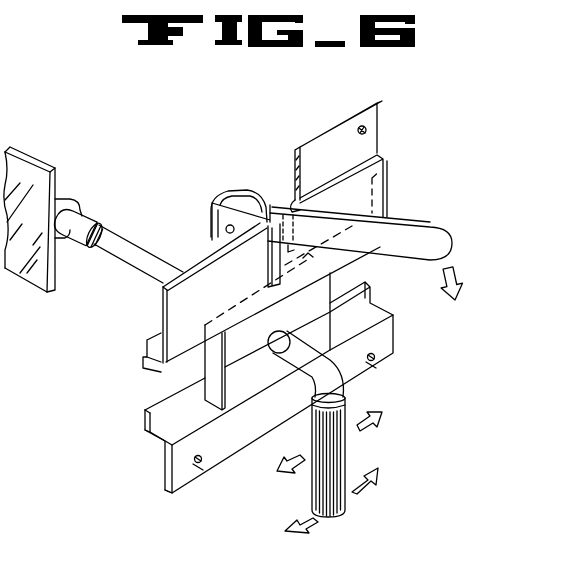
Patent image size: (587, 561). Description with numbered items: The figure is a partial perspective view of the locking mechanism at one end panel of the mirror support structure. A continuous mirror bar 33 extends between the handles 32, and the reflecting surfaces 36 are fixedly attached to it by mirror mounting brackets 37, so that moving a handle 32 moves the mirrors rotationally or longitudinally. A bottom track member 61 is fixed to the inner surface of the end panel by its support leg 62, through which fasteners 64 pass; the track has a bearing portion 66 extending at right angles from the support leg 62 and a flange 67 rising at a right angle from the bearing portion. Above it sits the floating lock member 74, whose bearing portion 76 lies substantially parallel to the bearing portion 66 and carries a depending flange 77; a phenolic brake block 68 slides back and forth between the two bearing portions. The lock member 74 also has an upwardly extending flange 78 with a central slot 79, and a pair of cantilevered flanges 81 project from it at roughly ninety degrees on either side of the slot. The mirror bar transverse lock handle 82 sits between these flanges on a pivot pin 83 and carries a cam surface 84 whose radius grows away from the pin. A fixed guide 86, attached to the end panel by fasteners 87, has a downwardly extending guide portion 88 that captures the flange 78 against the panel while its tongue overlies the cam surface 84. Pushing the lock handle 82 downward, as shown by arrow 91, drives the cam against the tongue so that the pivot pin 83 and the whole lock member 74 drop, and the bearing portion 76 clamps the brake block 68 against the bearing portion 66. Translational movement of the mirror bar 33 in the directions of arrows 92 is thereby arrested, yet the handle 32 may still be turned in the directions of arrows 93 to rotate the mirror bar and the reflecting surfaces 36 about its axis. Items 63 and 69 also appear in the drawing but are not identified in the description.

The handle 32 is at (348, 452).
The mirror bar 33 is at (107, 228).
The reflecting surfaces 36 is at (17, 160).
The mirror mounting bracket 37 is at (65, 203).
The bottom track member 61 is at (162, 468).
The support leg 62 is at (170, 487).
The screw hole 63 is at (375, 357).
The fasteners 64 is at (372, 365).
The bearing portion 66 is at (162, 443).
The flange 67 is at (144, 418).
The phenolic brake block 68 is at (205, 370).
The bent shaft 69 is at (275, 342).
The floating lock member 74 is at (158, 320).
The bearing portion 76 is at (146, 352).
The depending flange 77 is at (146, 365).
The upwardly extending flange 78 is at (161, 297).
The slot 79 is at (267, 259).
The cantilevered flanges 81 is at (222, 218).
The mirror bar transverse lock handle 82 is at (397, 221).
The pivot pin 83 is at (226, 231).
The cam surface 84 is at (232, 195).
The fixed guide 86 is at (385, 105).
The fasteners 87 is at (367, 130).
The guide portion 88 is at (388, 175).
The arrow 91 is at (458, 268).
The arrows 92 is at (375, 426).
The arrows 93 is at (370, 493).